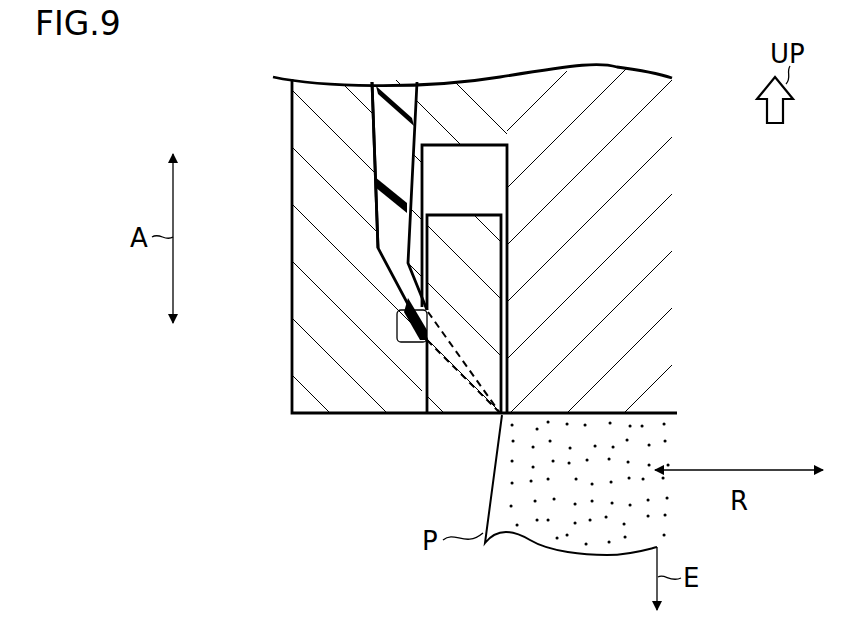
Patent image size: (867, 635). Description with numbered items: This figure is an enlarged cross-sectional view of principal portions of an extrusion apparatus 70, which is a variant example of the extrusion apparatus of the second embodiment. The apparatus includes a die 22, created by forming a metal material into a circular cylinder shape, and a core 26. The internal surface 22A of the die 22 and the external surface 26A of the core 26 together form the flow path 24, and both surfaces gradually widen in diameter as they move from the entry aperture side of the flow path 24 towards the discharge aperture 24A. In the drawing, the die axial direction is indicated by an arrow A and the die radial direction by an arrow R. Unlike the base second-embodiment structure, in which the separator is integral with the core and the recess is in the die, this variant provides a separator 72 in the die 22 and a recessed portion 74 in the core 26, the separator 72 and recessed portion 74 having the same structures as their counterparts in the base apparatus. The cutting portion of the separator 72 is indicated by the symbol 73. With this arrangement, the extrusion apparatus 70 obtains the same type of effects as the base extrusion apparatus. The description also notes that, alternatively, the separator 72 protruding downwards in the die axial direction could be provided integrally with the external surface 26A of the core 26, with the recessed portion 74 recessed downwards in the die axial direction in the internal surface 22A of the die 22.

The extrusion apparatus 70 is at (222, 88).
The die 22 is at (291, 378).
The flow path 24 is at (378, 162).
The internal surface 22A is at (375, 121).
The external surface 26A is at (407, 98).
The separator 72 is at (470, 213).
The recessed portion 74 is at (486, 150).
The cutting portion 73 is at (397, 327).
The discharge aperture 24A is at (497, 443).
The core 26 is at (540, 420).